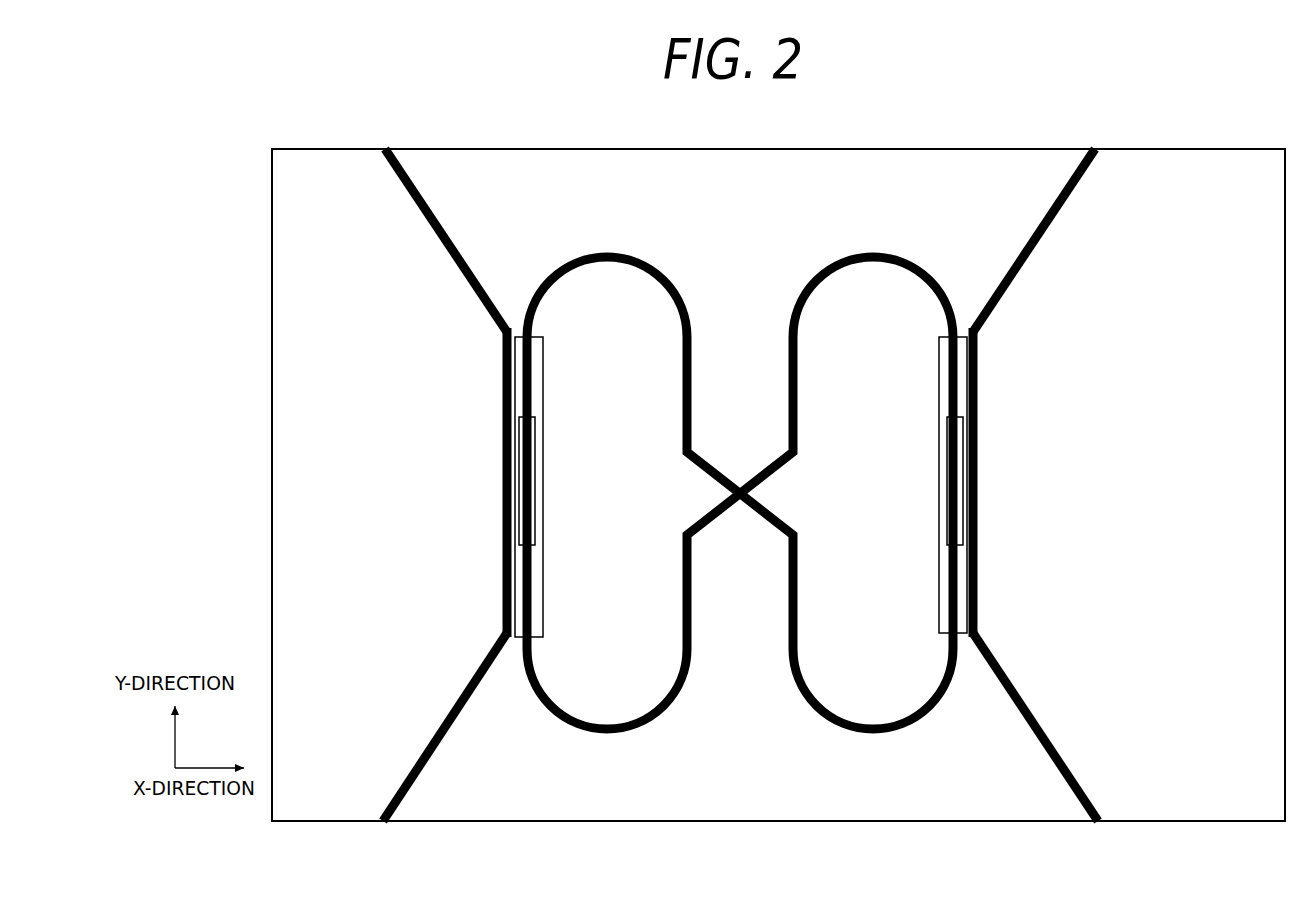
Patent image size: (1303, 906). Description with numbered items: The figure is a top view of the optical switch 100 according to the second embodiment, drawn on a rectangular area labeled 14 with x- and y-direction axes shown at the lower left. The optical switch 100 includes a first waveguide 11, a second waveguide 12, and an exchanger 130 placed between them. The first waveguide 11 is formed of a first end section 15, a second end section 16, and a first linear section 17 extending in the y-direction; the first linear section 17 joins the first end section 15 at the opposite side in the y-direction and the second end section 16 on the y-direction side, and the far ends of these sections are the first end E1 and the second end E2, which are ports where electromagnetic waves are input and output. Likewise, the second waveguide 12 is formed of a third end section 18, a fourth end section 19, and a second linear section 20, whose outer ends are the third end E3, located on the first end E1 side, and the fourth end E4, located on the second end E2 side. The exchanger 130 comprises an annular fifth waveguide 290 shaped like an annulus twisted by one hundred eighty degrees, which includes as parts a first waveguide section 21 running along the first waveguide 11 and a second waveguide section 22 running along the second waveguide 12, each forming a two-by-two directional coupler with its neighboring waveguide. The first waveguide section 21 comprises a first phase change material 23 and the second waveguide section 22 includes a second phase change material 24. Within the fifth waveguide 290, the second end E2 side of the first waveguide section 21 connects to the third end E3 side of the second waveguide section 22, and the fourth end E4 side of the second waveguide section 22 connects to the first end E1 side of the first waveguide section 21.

The optical switch 100 is at (282, 843).
The substrate 14 is at (338, 201).
The first waveguide 11 is at (380, 385).
The second waveguide 12 is at (1103, 385).
The first end section 15 is at (482, 665).
The second end section 16 is at (462, 268).
The first linear section 17 is at (505, 465).
The third end section 18 is at (1008, 675).
The fourth end section 19 is at (1020, 258).
The second linear section 20 is at (977, 465).
The first waveguide section 21 is at (547, 576).
The second waveguide section 22 is at (937, 573).
The first phase change material 23 is at (536, 468).
The second phase change material 24 is at (946, 478).
The fifth waveguide 290 is at (721, 563).
The exchanger 130 is at (573, 767).
The first end E1 is at (383, 822).
The second end E2 is at (385, 149).
The third end E3 is at (1098, 822).
The fourth end E4 is at (1095, 149).